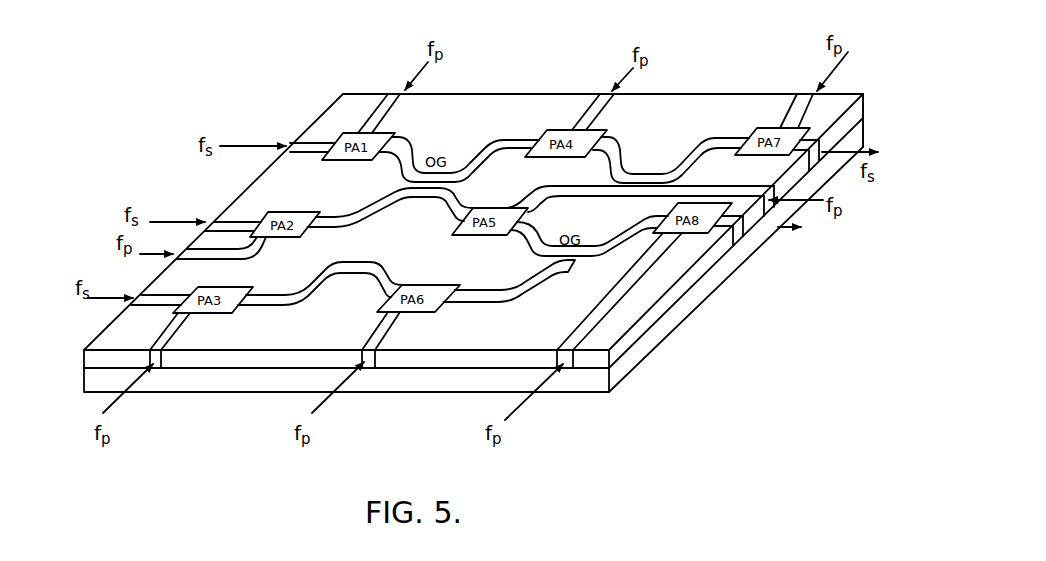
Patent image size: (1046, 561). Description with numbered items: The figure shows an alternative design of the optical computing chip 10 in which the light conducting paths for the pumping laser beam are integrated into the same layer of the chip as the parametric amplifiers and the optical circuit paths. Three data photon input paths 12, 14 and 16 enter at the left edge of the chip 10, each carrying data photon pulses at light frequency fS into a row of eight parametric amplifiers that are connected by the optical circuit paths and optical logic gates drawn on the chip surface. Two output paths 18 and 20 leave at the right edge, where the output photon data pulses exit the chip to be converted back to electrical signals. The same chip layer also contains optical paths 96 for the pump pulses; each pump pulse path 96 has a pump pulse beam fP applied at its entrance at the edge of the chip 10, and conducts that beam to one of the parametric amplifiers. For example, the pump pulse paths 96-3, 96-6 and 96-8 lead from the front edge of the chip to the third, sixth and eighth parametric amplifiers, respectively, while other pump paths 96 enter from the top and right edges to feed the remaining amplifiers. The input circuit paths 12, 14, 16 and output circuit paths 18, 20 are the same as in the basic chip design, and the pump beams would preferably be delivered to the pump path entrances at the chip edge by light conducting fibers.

The optical computing chip 10 is at (683, 118).
The data photon input path 12 is at (315, 137).
The data photon input path 14 is at (240, 217).
The data photon input path 16 is at (163, 298).
The output path 18 is at (838, 95).
The output path 20 is at (713, 236).
The optical path for pump pulses 96 is at (593, 108).
The pump pulse path 96-3 is at (195, 318).
The pump pulse path 96-6 is at (396, 318).
The pump pulse path 96-8 is at (600, 313).